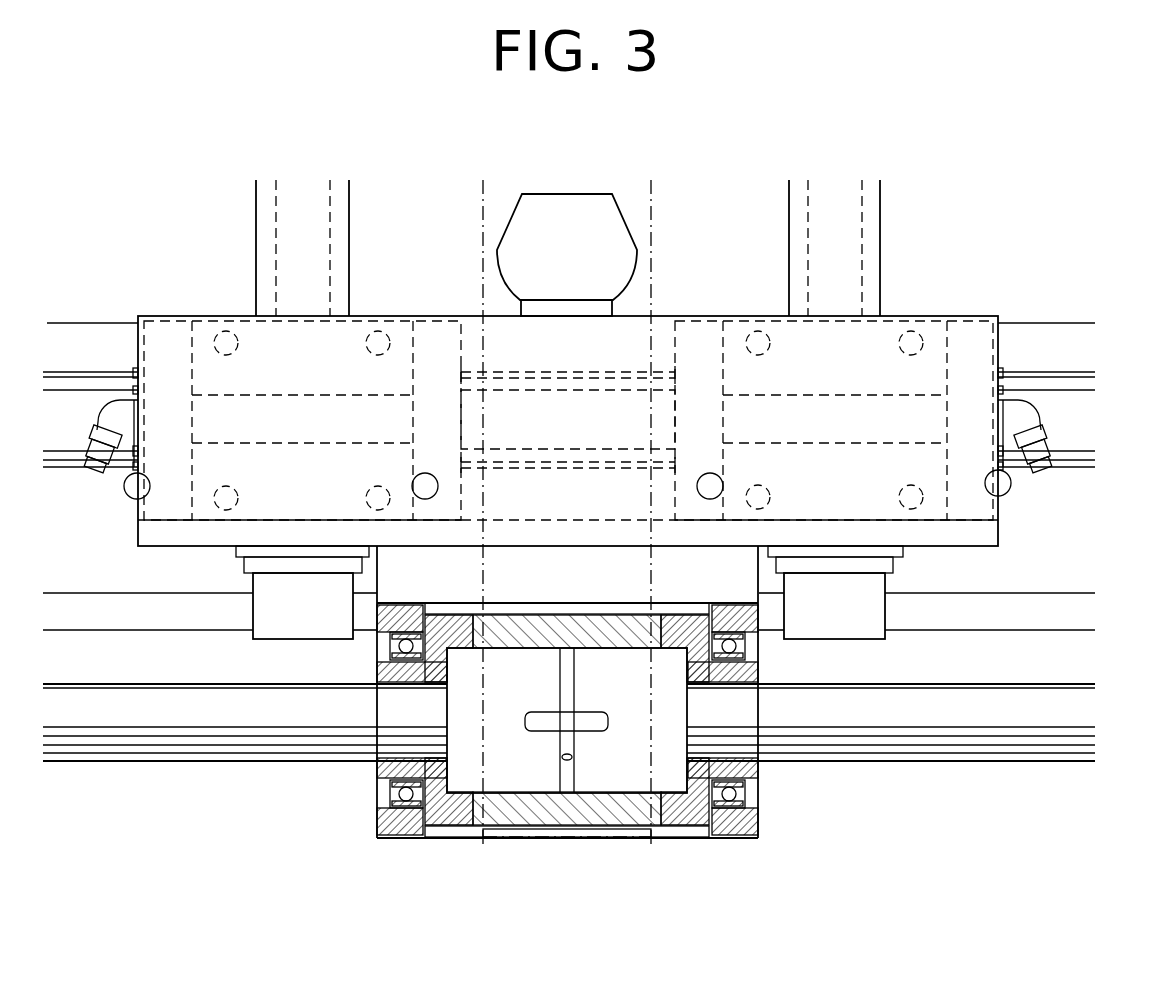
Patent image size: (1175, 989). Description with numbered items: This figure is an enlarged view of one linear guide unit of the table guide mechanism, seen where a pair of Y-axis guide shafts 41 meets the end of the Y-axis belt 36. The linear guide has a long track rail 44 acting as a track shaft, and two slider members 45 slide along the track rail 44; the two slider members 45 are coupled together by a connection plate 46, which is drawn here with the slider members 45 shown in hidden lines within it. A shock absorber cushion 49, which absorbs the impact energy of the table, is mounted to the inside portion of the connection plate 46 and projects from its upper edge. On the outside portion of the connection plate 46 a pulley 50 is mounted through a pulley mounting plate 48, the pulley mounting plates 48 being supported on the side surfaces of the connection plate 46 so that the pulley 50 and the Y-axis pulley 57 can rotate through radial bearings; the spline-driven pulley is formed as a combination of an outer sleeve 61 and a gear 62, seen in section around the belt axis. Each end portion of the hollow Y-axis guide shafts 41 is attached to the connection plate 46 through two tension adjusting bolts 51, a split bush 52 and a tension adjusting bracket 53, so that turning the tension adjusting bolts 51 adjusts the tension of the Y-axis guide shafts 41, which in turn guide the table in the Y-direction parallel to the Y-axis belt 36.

The Y-axis belt 36 is at (622, 832).
The Y-axis guide shaft 41 is at (350, 241).
The track rail 44 is at (1082, 368).
The slider member 45 is at (176, 350).
The connection plate 46 is at (637, 333).
The pulley mounting plate 48 is at (760, 583).
The shock absorber cushion 49 is at (571, 215).
The pulley 50 is at (513, 767).
The tension adjusting bolt 51 is at (283, 617).
The split bush 52 is at (903, 553).
The tension adjusting bracket 53 is at (985, 527).
The Y-axis pulley 57 is at (508, 850).
The outer sleeve 61 is at (675, 738).
The gear 62 is at (650, 827).